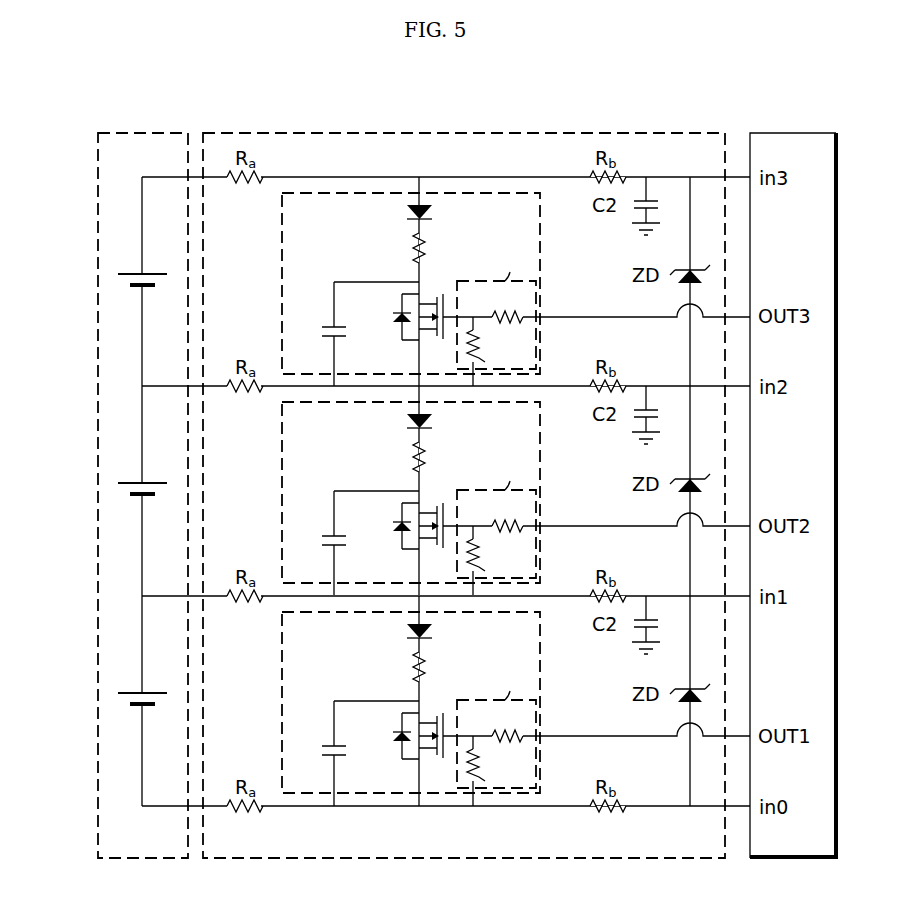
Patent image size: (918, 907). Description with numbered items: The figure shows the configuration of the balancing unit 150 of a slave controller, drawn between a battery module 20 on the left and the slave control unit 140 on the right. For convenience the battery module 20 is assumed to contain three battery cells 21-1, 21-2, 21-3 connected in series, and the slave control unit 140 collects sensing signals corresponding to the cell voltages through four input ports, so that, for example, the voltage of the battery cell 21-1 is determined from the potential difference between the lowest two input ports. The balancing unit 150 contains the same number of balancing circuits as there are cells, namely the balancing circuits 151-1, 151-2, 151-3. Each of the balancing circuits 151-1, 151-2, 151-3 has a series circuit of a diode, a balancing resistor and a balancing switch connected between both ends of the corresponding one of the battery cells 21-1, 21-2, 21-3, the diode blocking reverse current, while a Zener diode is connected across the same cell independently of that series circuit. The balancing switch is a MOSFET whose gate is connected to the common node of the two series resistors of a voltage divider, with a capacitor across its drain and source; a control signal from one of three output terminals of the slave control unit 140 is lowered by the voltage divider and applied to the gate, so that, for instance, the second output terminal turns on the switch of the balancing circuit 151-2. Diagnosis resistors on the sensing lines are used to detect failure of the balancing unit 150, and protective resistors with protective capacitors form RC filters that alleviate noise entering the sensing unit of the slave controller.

The battery module 20 is at (139, 132).
The battery cell 21-1 is at (117, 706).
The battery cell 21-2 is at (117, 496).
The battery cell 21-3 is at (117, 287).
The balancing unit 150 is at (452, 132).
The balancing circuit 151-1 is at (516, 701).
The balancing circuit 151-2 is at (516, 490).
The balancing circuit 151-3 is at (540, 262).
The slave control unit 140 is at (796, 132).